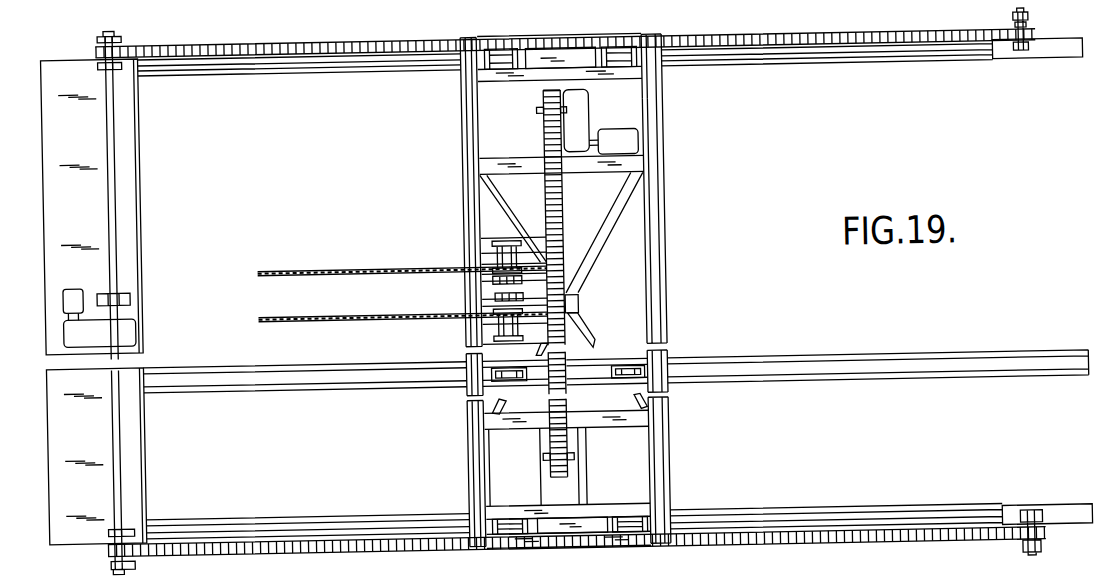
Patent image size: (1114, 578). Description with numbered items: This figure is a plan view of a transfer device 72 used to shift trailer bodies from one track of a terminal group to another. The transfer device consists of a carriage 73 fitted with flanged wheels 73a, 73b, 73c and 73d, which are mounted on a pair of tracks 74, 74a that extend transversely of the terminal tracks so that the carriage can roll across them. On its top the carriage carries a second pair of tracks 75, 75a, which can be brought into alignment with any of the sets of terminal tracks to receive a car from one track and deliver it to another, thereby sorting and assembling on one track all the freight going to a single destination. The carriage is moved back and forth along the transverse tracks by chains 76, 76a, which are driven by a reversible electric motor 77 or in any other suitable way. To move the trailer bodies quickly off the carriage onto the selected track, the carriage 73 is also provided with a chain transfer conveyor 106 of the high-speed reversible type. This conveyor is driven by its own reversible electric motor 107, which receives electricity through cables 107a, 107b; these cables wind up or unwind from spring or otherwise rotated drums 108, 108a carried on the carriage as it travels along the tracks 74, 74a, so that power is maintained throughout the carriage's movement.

The transfer device 72 is at (678, 193).
The carriage 73 is at (666, 246).
The flanged wheel 73a is at (515, 48).
The flanged wheel 73b is at (617, 48).
The flanged wheel 73c is at (504, 518).
The flanged wheel 73d is at (635, 518).
The track 74 is at (901, 62).
The track 74a is at (856, 521).
The track 75 is at (475, 34).
The track 75a is at (654, 36).
The chain 76 is at (389, 38).
The chain 76a is at (395, 549).
The reversible electric motor 77 is at (135, 329).
The chain transfer conveyor 106 is at (569, 226).
The reversible electric motor 107 is at (641, 141).
The cable 107a is at (341, 265).
The cable 107b is at (347, 317).
The drum 108 is at (500, 253).
The drum 108a is at (500, 326).